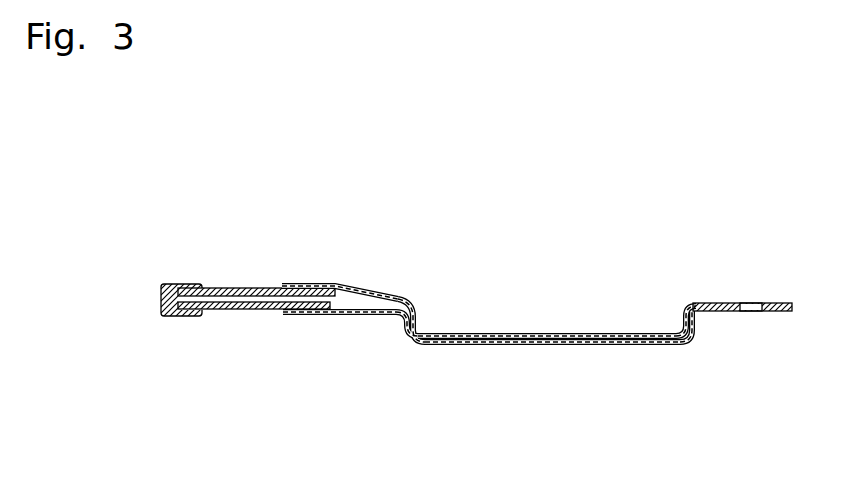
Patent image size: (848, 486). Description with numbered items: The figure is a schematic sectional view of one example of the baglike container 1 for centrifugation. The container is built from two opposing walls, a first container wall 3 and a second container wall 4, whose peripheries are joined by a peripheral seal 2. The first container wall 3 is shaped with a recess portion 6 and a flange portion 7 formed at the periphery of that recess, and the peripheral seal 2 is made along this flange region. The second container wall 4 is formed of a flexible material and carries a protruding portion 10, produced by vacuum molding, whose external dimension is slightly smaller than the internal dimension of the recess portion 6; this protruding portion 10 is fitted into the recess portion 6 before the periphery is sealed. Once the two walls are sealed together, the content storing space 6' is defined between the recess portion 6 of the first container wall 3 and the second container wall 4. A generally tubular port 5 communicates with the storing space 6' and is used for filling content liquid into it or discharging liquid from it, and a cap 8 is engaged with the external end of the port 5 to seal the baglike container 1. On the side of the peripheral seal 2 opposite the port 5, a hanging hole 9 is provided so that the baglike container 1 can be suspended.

The baglike container 1 is at (624, 212).
The peripheral seal 2 is at (719, 303).
The first container wall 3 is at (590, 345).
The second container wall 4 is at (372, 291).
The port 5 is at (258, 288).
The recess portion of first container wall 6 is at (433, 375).
The content storing space 6' is at (694, 377).
The flange portion of first container wall 7 is at (349, 288).
The cap 8 is at (189, 283).
The hanging hole 9 is at (752, 303).
The protruding portion of second container wall 10 is at (563, 333).